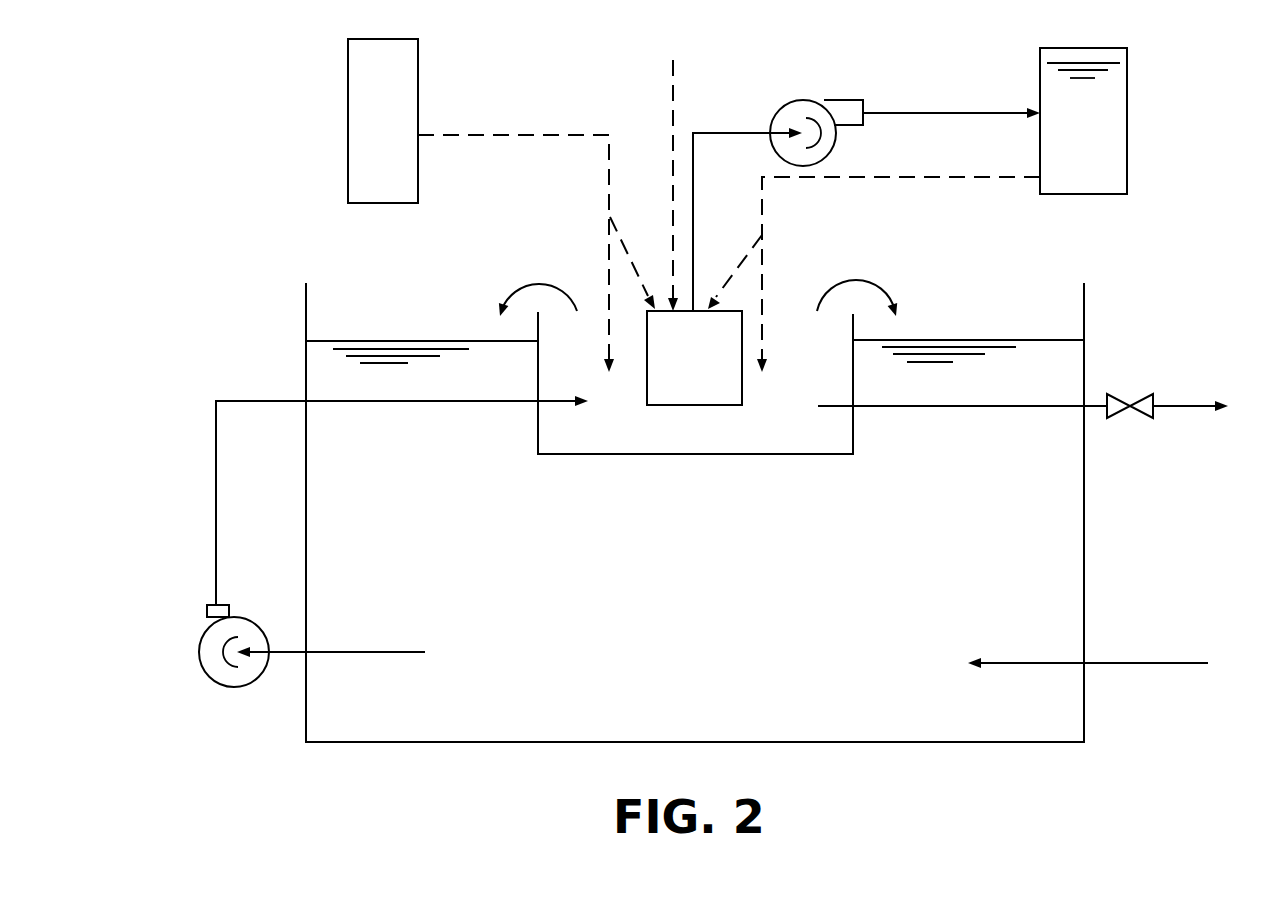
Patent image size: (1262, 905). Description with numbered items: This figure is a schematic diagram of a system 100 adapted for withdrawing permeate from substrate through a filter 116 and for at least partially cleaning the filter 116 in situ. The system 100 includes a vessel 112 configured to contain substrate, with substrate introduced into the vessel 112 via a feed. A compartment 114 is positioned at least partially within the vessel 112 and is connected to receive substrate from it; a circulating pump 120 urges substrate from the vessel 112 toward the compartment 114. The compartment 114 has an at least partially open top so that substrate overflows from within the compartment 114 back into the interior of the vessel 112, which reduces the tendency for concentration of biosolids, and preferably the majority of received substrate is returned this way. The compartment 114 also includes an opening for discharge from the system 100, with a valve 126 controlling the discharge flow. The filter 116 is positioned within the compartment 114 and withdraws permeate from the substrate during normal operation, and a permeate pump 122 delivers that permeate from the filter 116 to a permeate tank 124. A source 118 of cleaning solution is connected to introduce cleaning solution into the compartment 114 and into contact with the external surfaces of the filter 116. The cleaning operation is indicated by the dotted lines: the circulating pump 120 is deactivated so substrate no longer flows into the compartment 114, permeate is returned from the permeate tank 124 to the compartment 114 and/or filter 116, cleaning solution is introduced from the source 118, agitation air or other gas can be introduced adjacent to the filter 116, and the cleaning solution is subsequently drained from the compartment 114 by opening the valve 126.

The system 100 is at (108, 152).
The vessel 112 is at (668, 606).
The compartment 114 is at (668, 441).
The filter 116 is at (668, 374).
The source of cleaning solution 118 is at (358, 132).
The circulating pump 120 is at (199, 652).
The permeate pump 122 is at (811, 100).
The permeate tank 124 is at (1058, 132).
The valve 126 is at (1126, 395).